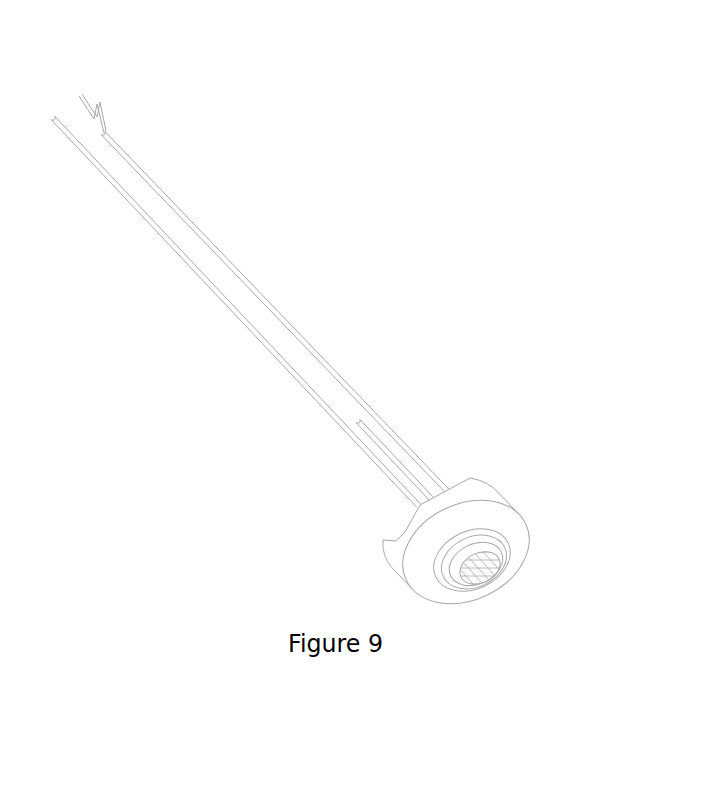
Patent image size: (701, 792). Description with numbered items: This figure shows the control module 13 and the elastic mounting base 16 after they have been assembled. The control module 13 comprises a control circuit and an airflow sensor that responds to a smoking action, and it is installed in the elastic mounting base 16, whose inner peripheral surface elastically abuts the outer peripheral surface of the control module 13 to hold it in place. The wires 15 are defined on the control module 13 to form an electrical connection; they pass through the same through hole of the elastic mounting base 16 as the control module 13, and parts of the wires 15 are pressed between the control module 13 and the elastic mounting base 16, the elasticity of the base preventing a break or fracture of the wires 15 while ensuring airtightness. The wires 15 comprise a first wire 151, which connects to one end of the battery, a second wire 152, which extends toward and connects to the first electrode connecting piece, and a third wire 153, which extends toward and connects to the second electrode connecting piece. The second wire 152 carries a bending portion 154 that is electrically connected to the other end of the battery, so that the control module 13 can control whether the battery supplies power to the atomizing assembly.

The control module 13 is at (502, 565).
The wires 15 is at (275, 311).
The first wire 151 is at (383, 442).
The second wire 152 is at (370, 408).
The third wire 153 is at (323, 397).
The bending portion 154 is at (103, 122).
The elastic mounting base 16 is at (453, 508).